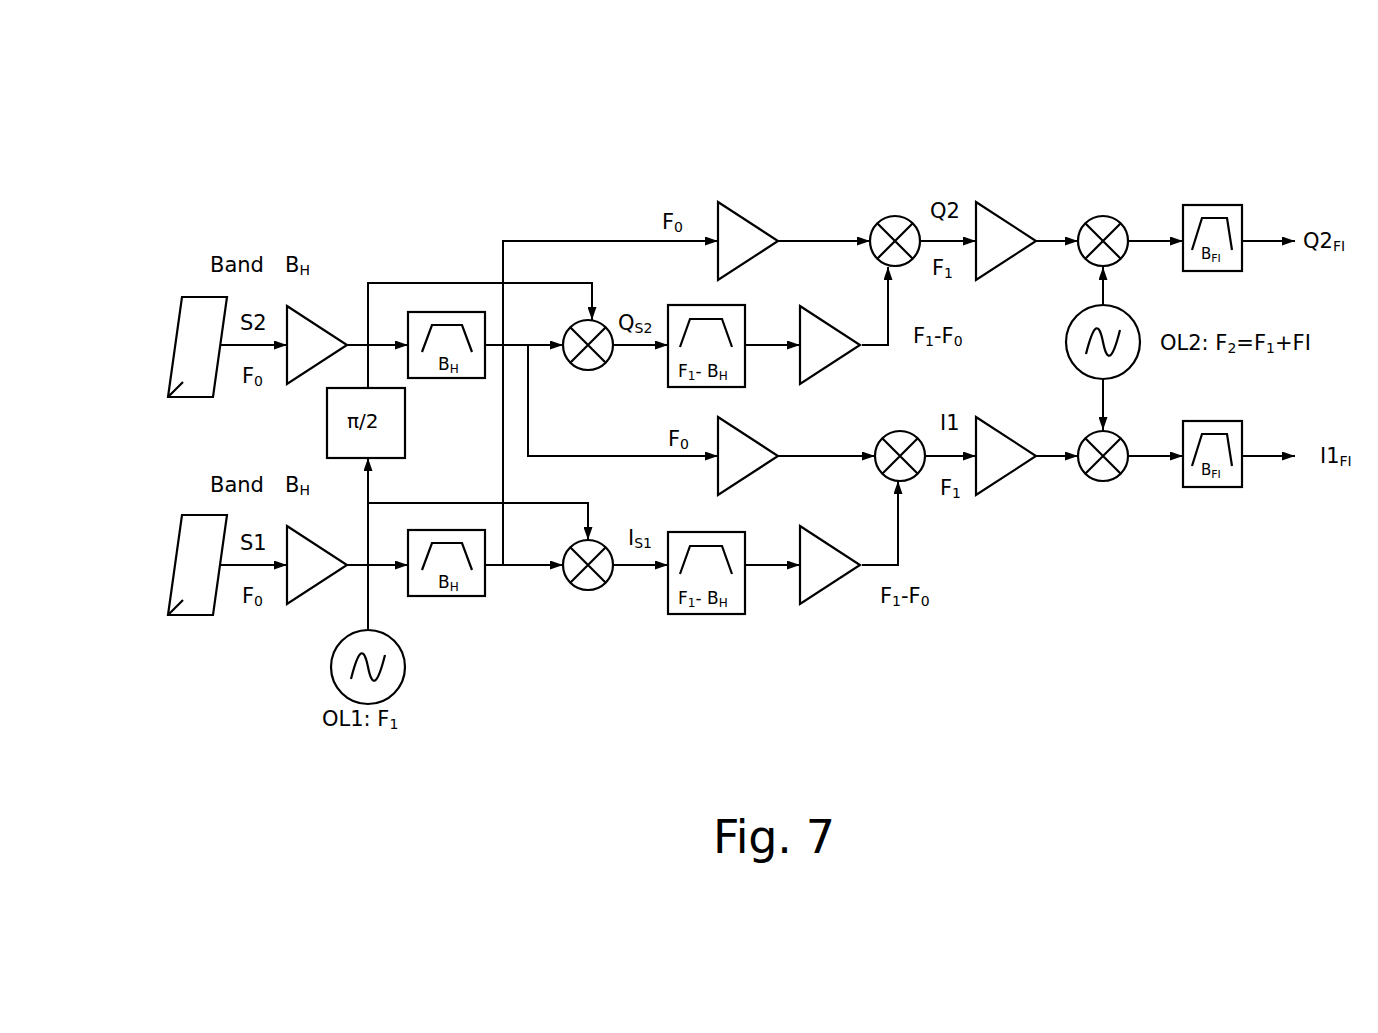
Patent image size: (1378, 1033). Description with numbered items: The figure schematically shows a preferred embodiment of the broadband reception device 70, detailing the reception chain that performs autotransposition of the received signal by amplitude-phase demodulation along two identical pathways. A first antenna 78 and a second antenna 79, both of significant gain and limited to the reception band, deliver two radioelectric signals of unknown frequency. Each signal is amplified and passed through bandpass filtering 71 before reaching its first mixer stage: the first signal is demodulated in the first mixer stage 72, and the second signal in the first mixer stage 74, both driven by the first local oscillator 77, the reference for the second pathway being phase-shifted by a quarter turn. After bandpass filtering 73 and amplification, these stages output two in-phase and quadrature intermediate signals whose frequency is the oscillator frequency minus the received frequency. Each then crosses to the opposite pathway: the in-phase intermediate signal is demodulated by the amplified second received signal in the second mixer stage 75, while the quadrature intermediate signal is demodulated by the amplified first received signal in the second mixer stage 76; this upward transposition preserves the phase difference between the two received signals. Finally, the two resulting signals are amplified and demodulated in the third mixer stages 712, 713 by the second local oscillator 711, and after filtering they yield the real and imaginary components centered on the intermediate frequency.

The broadband reception device 70 is at (436, 96).
The bandpass filtering 71 is at (447, 313).
The first mixer stage 72 is at (585, 591).
The bandpass filtering 73 is at (667, 380).
The first mixer stage 74 is at (577, 327).
The second mixer stage 75 is at (913, 483).
The second mixer stage 76 is at (893, 215).
The first local oscillator 77 is at (330, 683).
The antenna 78 is at (187, 600).
The antenna 79 is at (153, 398).
The second local oscillator 711 is at (1065, 355).
The third mixer stage 712 is at (1103, 482).
The third mixer stage 713 is at (1112, 212).